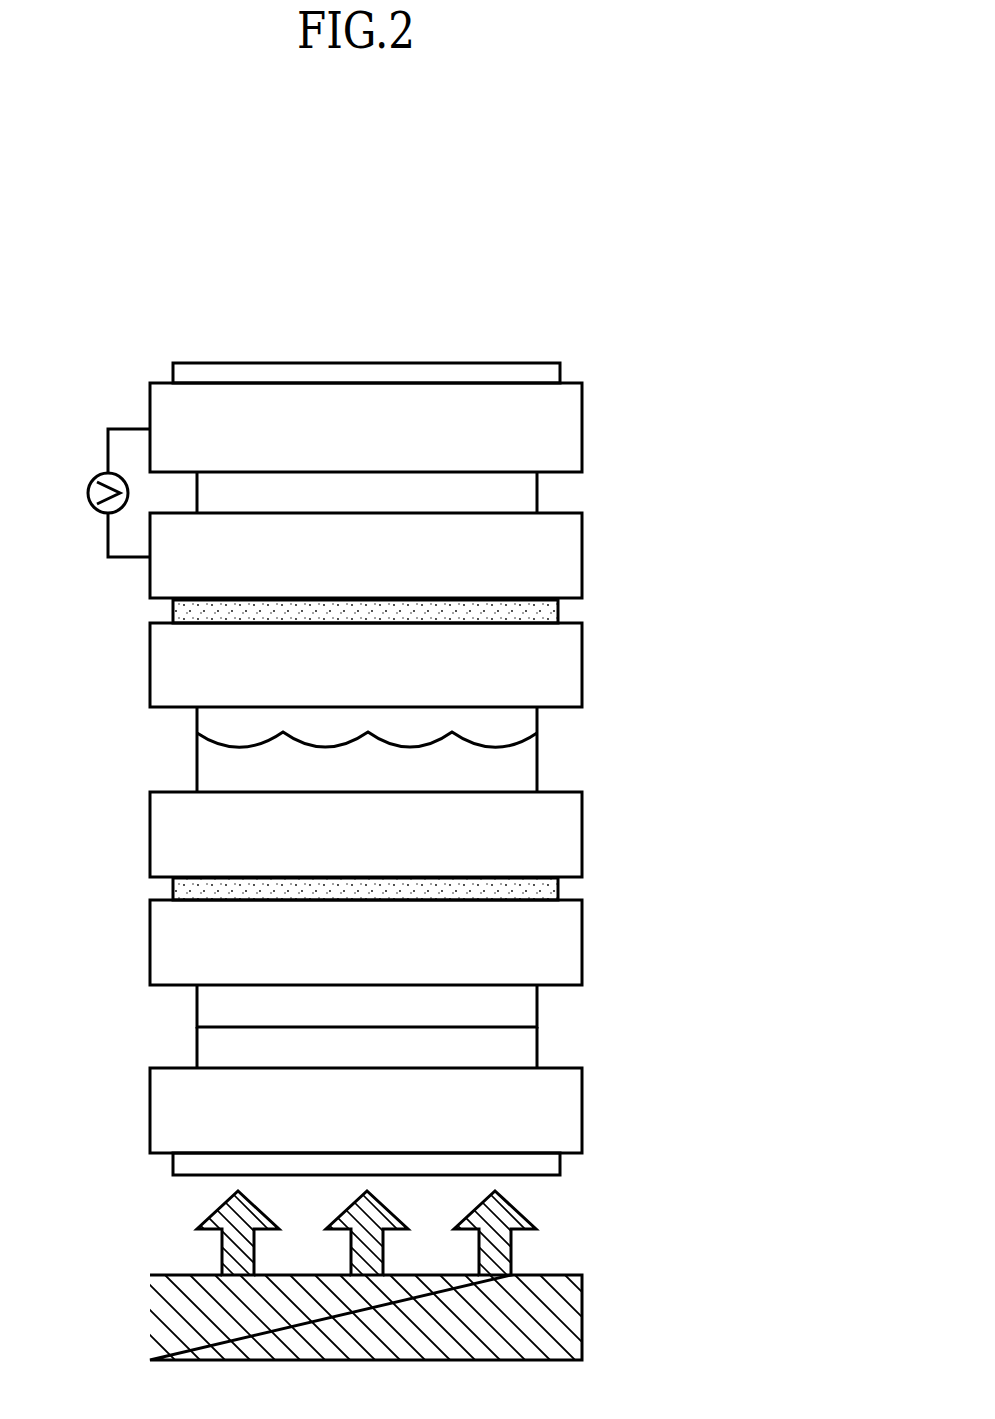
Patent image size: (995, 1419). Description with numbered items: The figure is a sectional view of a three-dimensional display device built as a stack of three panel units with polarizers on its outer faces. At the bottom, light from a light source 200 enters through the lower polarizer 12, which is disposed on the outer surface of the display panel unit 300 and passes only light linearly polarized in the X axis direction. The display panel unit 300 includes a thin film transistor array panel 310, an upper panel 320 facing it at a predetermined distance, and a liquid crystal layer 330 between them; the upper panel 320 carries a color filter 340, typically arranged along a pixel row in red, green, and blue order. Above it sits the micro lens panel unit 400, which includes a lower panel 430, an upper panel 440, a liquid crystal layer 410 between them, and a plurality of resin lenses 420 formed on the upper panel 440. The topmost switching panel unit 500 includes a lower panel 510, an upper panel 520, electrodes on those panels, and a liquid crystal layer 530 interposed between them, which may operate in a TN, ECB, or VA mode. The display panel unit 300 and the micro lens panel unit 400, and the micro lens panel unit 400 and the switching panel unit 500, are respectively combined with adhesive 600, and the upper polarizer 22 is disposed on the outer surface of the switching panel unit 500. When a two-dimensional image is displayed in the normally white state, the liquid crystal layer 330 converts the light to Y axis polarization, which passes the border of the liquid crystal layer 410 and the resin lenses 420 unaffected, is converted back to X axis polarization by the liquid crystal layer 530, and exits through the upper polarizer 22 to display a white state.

The upper polarizer 22 is at (173, 372).
The upper panel of switching panel unit 520 is at (582, 427).
The liquid crystal layer of switching panel unit 530 is at (537, 493).
The lower panel of switching panel unit 510 is at (421, 555).
The switching panel unit 500 is at (462, 490).
The adhesive 600 is at (150, 608).
The upper panel of micro lens panel unit 440 is at (582, 663).
The resin lenses 420 is at (517, 735).
The liquid crystal layer of micro lens panel unit 410 is at (517, 783).
The lower panel of micro lens panel unit 430 is at (421, 834).
The micro lens panel unit 400 is at (464, 753).
The upper panel 320 is at (582, 938).
The color filter 340 is at (537, 1013).
The liquid crystal layer of display panel unit 330 is at (537, 1055).
The thin film transistor array panel 310 is at (421, 1110).
The display panel unit 300 is at (464, 1030).
The lower polarizer 12 is at (173, 1173).
The light source 200 is at (582, 1343).